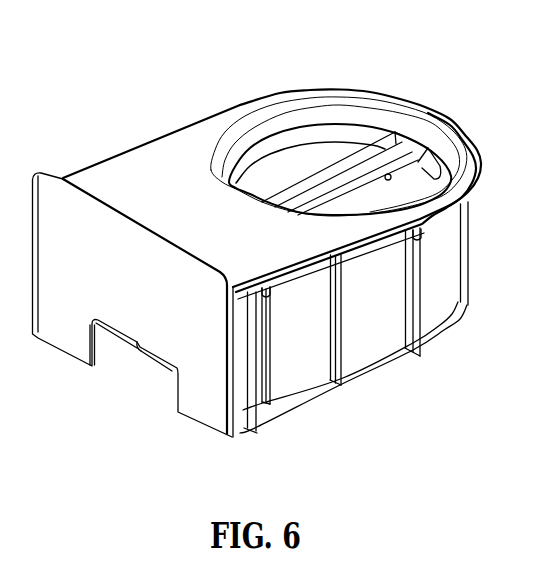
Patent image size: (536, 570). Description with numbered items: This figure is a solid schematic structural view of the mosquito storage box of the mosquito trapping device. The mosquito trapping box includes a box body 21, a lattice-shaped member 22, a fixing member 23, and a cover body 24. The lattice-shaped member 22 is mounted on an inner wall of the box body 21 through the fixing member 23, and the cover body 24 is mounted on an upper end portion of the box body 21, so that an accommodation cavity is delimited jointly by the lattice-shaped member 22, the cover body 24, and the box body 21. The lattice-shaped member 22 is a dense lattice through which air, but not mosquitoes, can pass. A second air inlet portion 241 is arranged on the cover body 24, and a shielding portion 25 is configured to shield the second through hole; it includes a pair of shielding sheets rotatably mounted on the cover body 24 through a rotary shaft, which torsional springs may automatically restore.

The box body 21 is at (337, 386).
The lattice-shaped member 22 is at (377, 329).
The fixing member 23 is at (250, 292).
The cover body 24 is at (148, 162).
The second air inlet portion 241 is at (253, 128).
The shielding portion 25 is at (330, 150).